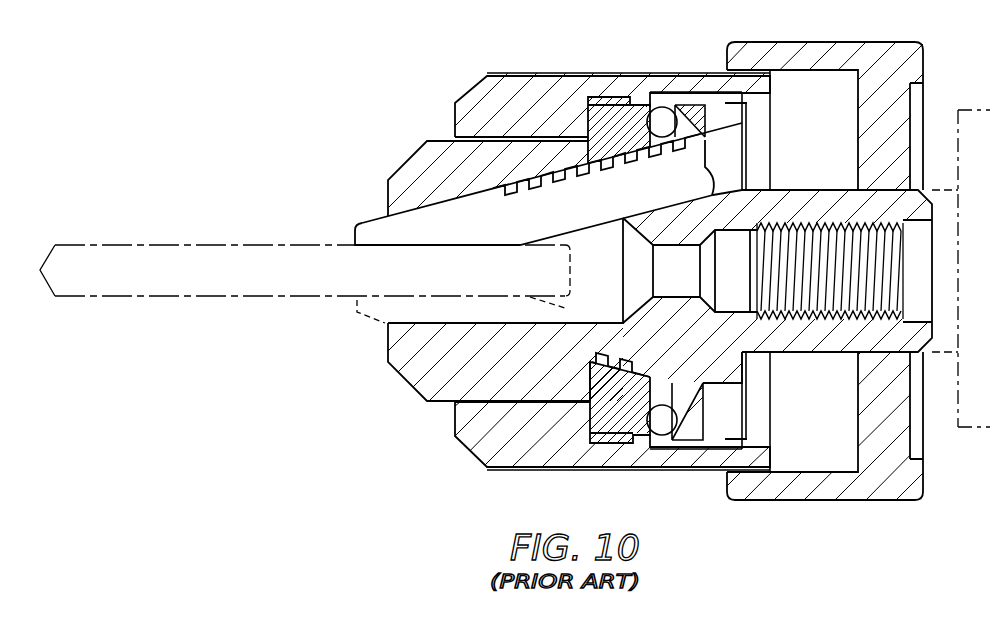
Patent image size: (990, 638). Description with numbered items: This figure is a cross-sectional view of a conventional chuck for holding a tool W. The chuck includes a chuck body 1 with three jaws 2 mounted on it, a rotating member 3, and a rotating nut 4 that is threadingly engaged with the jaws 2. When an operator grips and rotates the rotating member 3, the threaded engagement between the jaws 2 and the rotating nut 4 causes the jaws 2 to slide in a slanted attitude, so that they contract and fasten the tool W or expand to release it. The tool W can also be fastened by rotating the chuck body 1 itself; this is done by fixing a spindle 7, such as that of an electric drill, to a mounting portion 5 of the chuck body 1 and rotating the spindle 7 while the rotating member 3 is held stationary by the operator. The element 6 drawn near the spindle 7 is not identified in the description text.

The wire W is at (181, 288).
The connector body 1 is at (388, 180).
The wedge clamp member 2 is at (362, 223).
The sleeve 3 is at (543, 83).
The ratchet pawl 4 is at (618, 100).
The threaded bore 5 is at (830, 224).
The panel 6 is at (977, 118).
The panel opening 7 is at (947, 189).